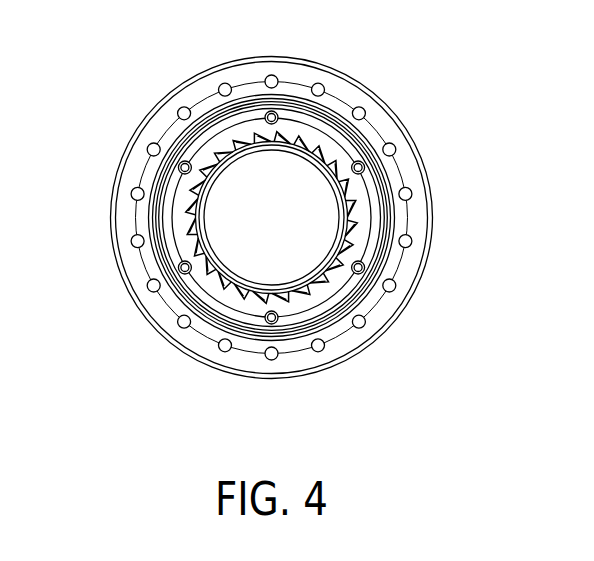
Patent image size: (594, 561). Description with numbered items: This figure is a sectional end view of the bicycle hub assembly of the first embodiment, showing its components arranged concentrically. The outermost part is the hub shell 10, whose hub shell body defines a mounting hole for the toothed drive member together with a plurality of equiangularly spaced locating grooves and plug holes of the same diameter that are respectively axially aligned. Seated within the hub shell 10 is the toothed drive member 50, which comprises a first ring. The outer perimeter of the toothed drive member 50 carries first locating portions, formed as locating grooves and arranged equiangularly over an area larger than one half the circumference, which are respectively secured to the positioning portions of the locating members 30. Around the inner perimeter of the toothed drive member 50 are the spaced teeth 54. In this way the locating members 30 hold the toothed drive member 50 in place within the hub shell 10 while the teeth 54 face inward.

The hub shell 10 is at (348, 343).
The locating members 30 is at (371, 267).
The toothed drive member 50 is at (355, 161).
The teeth 54 is at (313, 146).